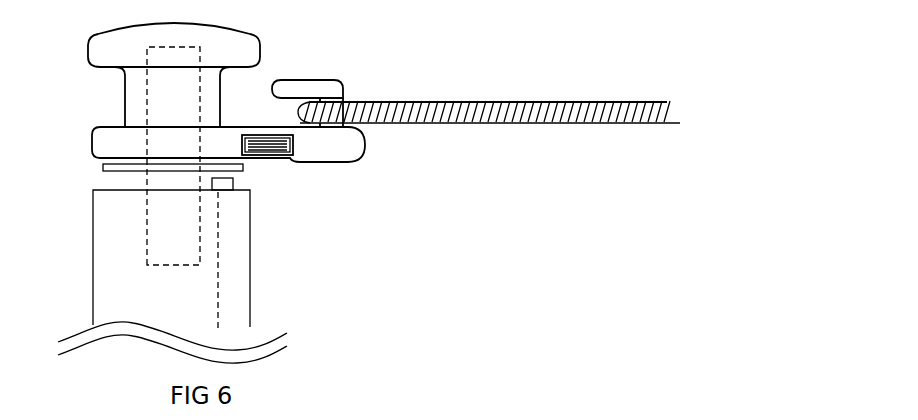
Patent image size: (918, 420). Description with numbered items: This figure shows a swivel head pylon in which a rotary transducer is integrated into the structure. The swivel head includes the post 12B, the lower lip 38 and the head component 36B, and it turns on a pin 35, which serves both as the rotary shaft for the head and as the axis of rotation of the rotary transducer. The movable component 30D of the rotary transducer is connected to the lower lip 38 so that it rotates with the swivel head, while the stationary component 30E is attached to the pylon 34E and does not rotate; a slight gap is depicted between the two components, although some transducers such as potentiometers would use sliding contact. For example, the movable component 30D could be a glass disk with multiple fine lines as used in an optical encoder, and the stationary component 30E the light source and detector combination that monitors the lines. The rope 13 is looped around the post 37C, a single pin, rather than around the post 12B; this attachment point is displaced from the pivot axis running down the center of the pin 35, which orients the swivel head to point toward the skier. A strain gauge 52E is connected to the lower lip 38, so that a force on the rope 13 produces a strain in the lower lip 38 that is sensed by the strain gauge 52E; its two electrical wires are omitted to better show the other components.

The swivel head component 36B is at (227, 27).
The swivel head post 12B is at (125, 92).
The pin 35 is at (145, 118).
The lower lip 38 is at (367, 147).
The strain gauge 52E is at (293, 150).
The post 37C is at (322, 80).
The rope 13 is at (455, 123).
The movable rotary transducer component 30D is at (103, 167).
The stationary rotary transducer component 30E is at (234, 184).
The pylon 34E is at (250, 267).